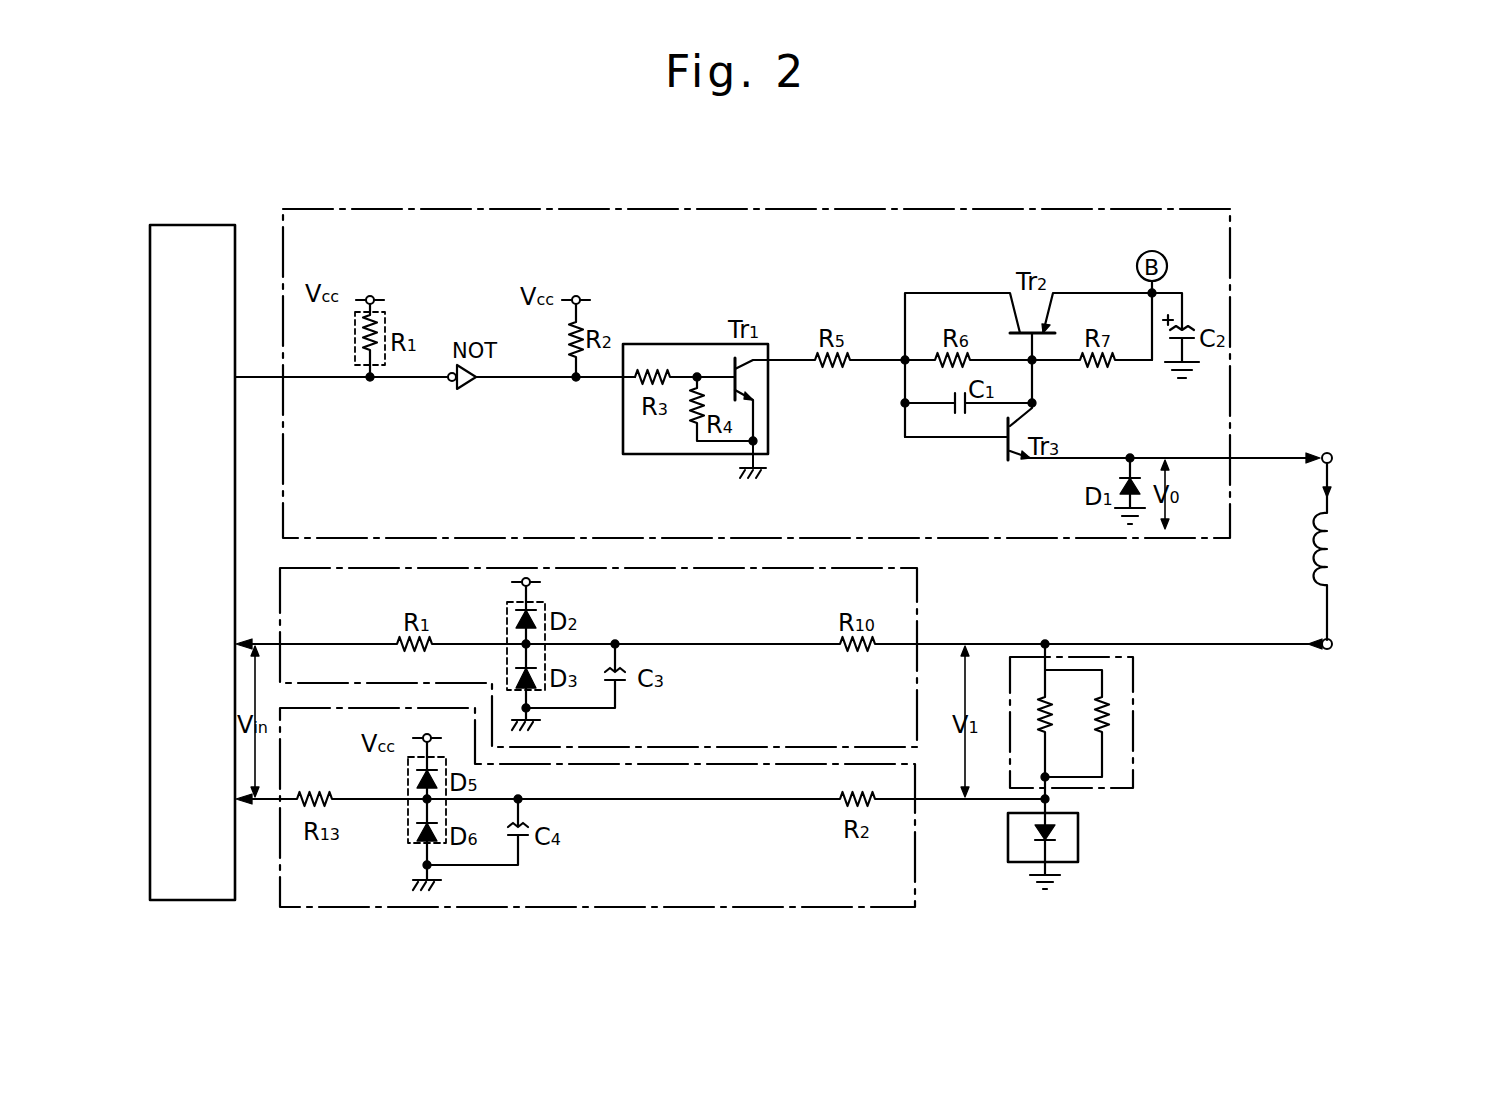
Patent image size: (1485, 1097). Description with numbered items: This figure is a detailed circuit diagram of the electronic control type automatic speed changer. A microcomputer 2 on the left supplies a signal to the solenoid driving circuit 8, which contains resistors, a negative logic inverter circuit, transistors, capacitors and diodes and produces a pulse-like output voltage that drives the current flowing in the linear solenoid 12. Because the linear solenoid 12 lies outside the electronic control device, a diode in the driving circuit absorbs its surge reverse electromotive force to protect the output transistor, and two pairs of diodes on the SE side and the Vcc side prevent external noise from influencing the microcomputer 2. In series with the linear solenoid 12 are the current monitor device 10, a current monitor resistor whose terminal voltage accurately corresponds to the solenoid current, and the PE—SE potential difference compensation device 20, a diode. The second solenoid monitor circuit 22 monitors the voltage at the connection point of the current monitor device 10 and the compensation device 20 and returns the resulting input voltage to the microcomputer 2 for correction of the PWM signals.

The microcomputer 2 is at (207, 232).
The solenoid driving circuit 8 is at (1203, 203).
The current monitor device 10 is at (1133, 724).
The linear solenoid 12 is at (1344, 548).
The PE—SE potential difference compensation device 20 is at (1078, 838).
The second solenoid monitor circuit 22 is at (910, 878).